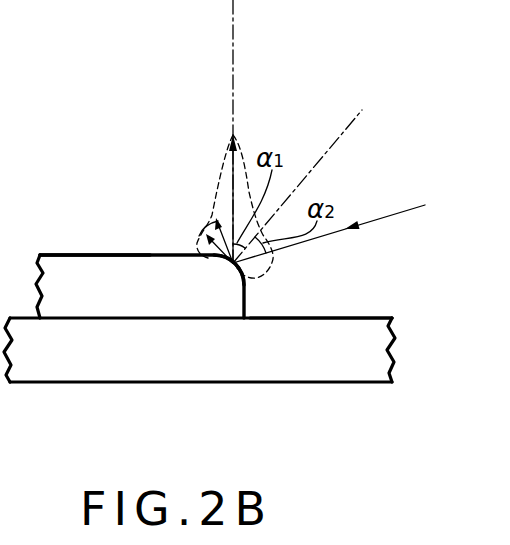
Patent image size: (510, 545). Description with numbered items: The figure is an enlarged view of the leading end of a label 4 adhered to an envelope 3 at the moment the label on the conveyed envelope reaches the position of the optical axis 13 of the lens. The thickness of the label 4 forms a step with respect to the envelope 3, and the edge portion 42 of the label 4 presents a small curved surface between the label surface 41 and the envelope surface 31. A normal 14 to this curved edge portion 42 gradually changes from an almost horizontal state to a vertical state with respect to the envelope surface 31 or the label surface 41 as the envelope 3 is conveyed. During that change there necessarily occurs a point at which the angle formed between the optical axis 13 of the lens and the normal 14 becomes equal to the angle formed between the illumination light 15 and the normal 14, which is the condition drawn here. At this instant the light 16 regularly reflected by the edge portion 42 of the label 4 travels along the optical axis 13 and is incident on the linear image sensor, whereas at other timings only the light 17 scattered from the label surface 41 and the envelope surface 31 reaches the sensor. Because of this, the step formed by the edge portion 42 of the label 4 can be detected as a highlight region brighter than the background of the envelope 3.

The envelope 3 is at (175, 342).
The label 4 is at (108, 287).
The optical axis 13 is at (232, 63).
The normal 14 is at (317, 160).
The illumination light 15 is at (390, 216).
The regularly reflected light 16 is at (230, 182).
The scattered light 17 is at (200, 242).
The envelope surface 31 is at (308, 318).
The label surface 41 is at (93, 253).
The edge portion 42 is at (248, 289).